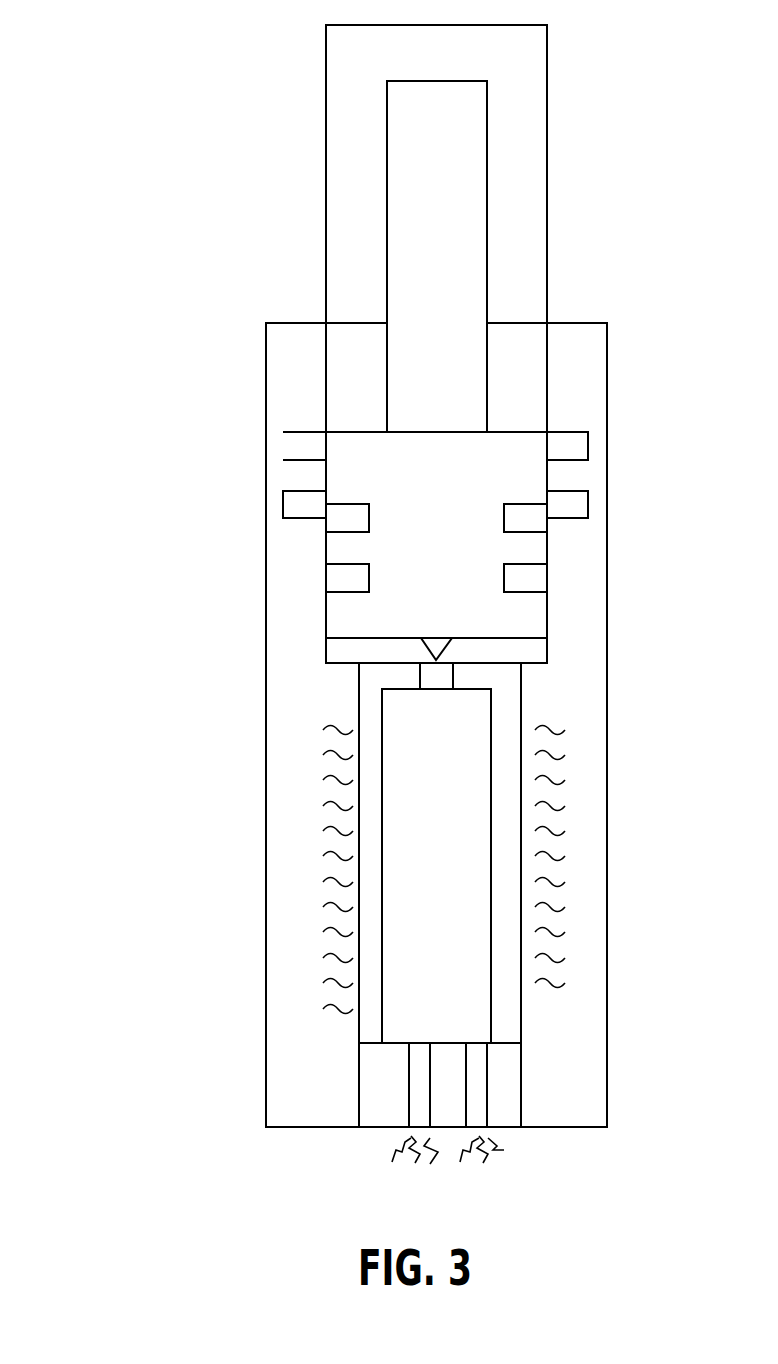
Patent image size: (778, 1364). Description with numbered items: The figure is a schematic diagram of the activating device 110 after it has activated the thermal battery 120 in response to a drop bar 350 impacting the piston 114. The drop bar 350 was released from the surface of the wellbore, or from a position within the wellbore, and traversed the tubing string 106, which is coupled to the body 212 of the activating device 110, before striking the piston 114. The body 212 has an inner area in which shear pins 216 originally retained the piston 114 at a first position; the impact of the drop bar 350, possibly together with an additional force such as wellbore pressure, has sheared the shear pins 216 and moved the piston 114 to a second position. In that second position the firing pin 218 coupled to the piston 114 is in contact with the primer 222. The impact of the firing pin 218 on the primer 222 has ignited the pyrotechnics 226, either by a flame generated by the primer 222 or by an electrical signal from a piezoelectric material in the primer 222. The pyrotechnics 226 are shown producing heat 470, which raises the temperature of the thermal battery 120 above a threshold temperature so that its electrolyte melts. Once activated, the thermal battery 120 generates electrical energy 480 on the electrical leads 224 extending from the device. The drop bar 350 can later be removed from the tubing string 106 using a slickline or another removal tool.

The activating device 110 is at (133, 84).
The tubing string 106 is at (325, 256).
The drop bar 350 is at (385, 122).
The body 212 is at (265, 323).
The piston 114 is at (330, 464).
The shear pins 216 is at (283, 512).
The firing pin 218 is at (428, 653).
The primer 222 is at (420, 677).
The pyrotechnics 226 is at (359, 810).
The thermal battery 120 is at (388, 1030).
The electrical leads 224 is at (420, 1112).
The heat 470 is at (545, 985).
The electrical energy 480 is at (503, 1148).